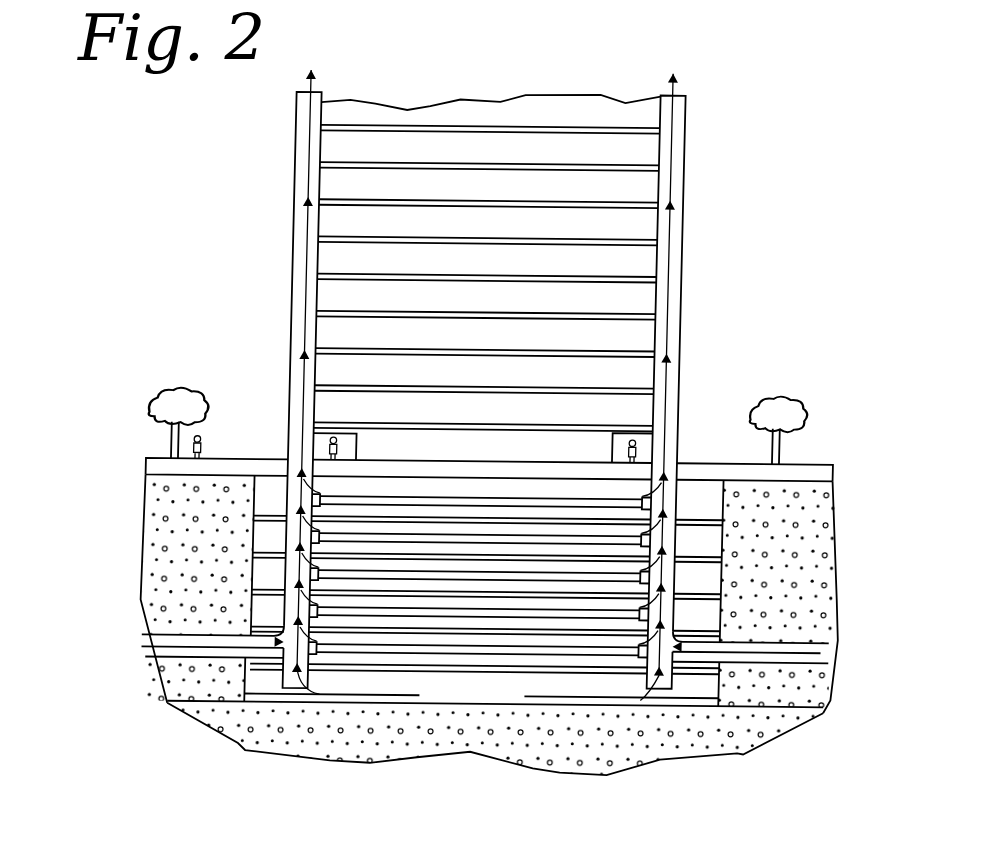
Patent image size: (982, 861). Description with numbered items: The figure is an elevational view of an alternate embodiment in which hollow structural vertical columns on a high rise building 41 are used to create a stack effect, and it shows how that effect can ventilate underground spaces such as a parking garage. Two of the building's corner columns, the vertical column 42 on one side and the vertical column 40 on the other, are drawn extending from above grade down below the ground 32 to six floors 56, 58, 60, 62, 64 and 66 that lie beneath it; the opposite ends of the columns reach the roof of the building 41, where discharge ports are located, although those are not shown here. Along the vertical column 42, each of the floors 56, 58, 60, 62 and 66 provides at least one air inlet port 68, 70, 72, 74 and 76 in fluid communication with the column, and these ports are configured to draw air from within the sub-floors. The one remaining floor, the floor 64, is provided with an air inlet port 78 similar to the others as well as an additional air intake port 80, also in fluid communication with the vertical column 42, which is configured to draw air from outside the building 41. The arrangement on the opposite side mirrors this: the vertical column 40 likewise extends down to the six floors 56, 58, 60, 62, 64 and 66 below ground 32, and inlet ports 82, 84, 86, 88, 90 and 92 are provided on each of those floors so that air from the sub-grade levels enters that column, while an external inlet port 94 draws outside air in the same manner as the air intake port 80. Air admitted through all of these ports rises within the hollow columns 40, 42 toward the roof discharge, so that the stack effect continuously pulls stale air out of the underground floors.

The building 41 is at (619, 53).
The vertical column 42 is at (296, 155).
The vertical column 40 is at (666, 159).
The floor 58 is at (494, 500).
The floor 56 is at (442, 544).
The ground 32 is at (700, 456).
The air inlet port 68 is at (317, 497).
The air inlet port 70 is at (317, 535).
The air inlet port 72 is at (317, 572).
The air inlet port 74 is at (317, 609).
The air inlet port 78 is at (317, 646).
The air intake port 80 is at (279, 649).
The air inlet port 76 is at (255, 690).
The inlet port 82 is at (679, 499).
The inlet port 84 is at (679, 536).
The inlet port 86 is at (679, 573).
The inlet port 88 is at (679, 610).
The inlet port 90 is at (679, 647).
The external inlet port 94 is at (798, 650).
The inlet port 92 is at (728, 696).
The floor 60 is at (504, 573).
The floor 62 is at (476, 610).
The floor 64 is at (487, 683).
The floor 66 is at (452, 646).